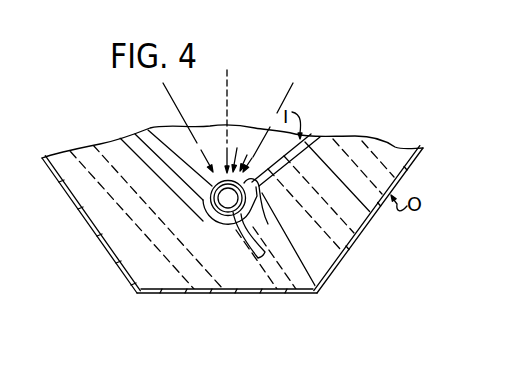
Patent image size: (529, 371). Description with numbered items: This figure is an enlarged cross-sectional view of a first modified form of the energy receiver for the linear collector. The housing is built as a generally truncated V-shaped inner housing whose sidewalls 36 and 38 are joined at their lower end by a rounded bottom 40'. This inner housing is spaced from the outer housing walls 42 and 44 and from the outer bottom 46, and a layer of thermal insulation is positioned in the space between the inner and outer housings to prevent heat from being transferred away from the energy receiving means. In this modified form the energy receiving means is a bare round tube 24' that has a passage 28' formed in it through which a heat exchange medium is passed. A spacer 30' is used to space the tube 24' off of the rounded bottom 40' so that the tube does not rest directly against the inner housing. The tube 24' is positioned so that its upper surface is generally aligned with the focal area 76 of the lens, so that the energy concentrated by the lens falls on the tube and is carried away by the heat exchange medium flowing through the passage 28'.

The sidewall 36 is at (309, 138).
The sidewall 38 is at (153, 130).
The outer housing wall 42 is at (363, 230).
The outer housing wall 44 is at (80, 210).
The bottom 46 is at (304, 293).
The focal area 76 is at (237, 148).
The bare round tube 24' is at (272, 208).
The passage 28' is at (224, 219).
The spacer 30' is at (203, 222).
The rounded bottom 40' is at (246, 245).